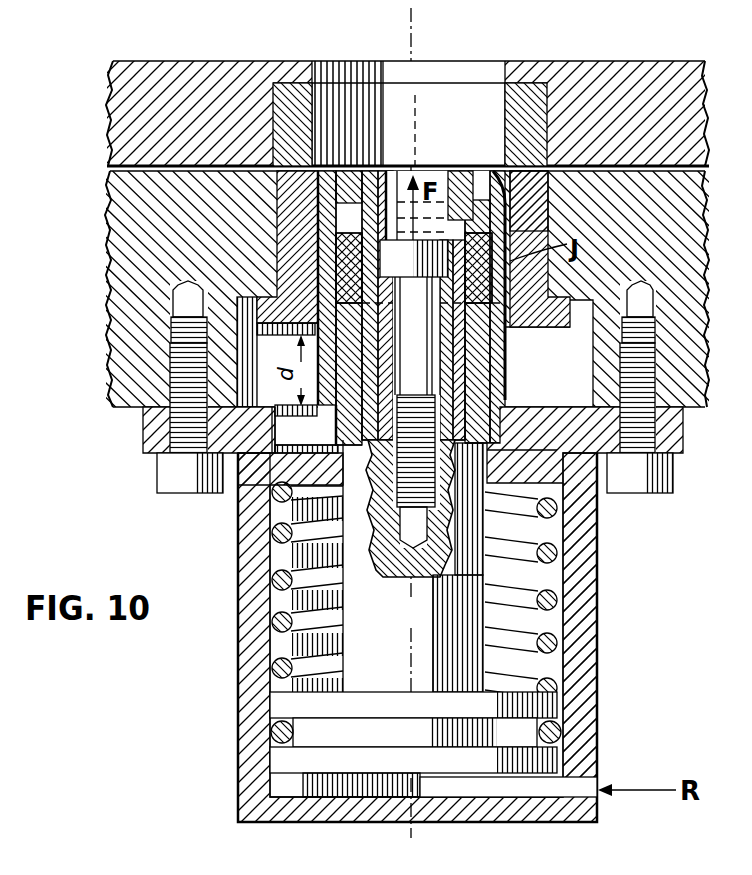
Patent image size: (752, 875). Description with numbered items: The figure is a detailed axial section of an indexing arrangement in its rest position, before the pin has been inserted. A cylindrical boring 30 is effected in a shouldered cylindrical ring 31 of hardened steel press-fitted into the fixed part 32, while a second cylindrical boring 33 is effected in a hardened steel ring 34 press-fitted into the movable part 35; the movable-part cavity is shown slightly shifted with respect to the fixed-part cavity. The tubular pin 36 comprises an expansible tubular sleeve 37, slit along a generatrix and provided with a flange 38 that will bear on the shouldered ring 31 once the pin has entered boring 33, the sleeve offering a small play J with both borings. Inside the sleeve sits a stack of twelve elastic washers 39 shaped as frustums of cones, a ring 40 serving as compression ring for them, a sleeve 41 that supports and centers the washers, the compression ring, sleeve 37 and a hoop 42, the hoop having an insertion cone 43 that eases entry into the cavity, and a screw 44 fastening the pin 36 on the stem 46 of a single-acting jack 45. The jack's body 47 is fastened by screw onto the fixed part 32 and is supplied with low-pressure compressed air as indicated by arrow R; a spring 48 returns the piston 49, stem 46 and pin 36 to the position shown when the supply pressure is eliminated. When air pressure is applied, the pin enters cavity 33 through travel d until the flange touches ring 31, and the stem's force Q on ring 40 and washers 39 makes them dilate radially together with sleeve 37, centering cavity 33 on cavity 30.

The cylindrical boring 30 is at (499, 196).
The shouldered cylindrical ring 31 is at (291, 211).
The fixed part 32 is at (121, 249).
The cylindrical boring 33 is at (506, 96).
The hardened steel ring 34 is at (292, 92).
The movable part 35 is at (186, 68).
The tubular pin 36 is at (464, 327).
The expansible tubular sleeve 37 is at (494, 350).
The flange 38 is at (531, 422).
The elastic washers 39 is at (337, 262).
The ring 40 is at (487, 392).
The sleeve 41 is at (458, 182).
The hoop 42 is at (508, 210).
The insertion cone 43 is at (334, 176).
The screw 44 is at (424, 381).
The single-acting jack 45 is at (226, 757).
The stem 46 is at (424, 621).
The jack's body 47 is at (592, 563).
The spring 48 is at (556, 643).
The piston 49 is at (279, 707).